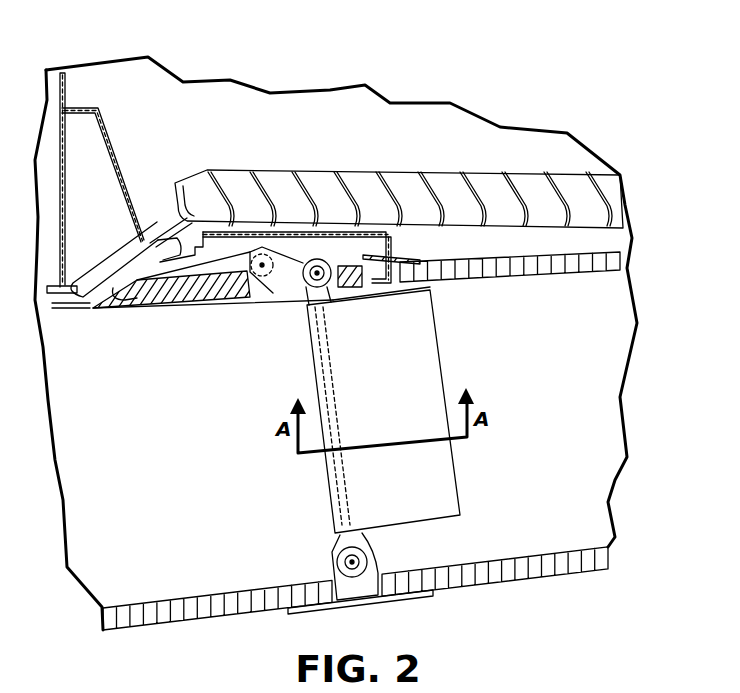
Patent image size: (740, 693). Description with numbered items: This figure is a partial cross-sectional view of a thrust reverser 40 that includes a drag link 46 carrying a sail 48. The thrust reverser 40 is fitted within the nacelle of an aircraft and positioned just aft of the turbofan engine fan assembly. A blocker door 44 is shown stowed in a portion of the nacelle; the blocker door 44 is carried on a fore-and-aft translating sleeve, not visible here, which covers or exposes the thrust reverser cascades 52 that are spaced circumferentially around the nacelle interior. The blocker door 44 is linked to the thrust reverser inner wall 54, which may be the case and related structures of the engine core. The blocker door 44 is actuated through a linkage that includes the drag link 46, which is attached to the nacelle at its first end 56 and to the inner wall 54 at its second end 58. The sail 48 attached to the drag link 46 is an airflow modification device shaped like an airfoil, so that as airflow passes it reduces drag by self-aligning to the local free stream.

The thrust reverser 40 is at (562, 86).
The blocker door 44 is at (194, 300).
The drag link 46 is at (338, 545).
The sail 48 is at (417, 348).
The thrust reverser cascades 52 is at (440, 172).
The thrust reverser inner wall 54 is at (522, 579).
The first end 56 is at (298, 286).
The second end 58 is at (368, 563).